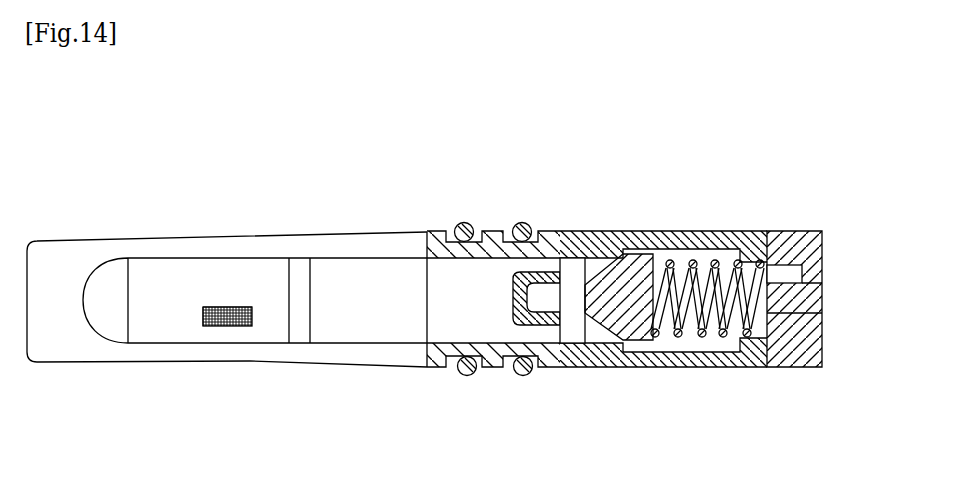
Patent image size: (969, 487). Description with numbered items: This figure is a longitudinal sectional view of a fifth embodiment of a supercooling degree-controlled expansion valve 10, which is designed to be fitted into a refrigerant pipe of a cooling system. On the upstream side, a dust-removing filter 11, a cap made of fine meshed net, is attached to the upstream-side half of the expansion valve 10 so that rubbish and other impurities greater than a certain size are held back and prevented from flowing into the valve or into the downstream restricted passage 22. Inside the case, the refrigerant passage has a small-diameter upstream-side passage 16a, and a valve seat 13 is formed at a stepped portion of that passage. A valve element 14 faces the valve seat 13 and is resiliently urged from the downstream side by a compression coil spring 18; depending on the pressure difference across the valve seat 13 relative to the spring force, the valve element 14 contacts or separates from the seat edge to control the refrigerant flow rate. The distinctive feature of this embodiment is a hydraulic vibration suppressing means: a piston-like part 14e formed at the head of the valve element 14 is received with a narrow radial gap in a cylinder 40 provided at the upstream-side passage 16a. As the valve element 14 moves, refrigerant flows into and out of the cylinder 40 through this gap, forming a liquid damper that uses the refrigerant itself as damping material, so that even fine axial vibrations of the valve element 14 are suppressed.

The supercooling degree-controlled expansion valve 10 is at (406, 205).
The dust-removing filter 11 is at (180, 327).
The valve seat 13 is at (613, 231).
The valve element 14 is at (642, 340).
The piston-like part 14e is at (568, 292).
The upstream-side passage 16a is at (500, 257).
The compression coil spring 18 is at (724, 338).
The downstream restricted passage 22 is at (803, 231).
The cylinder 40 is at (544, 322).